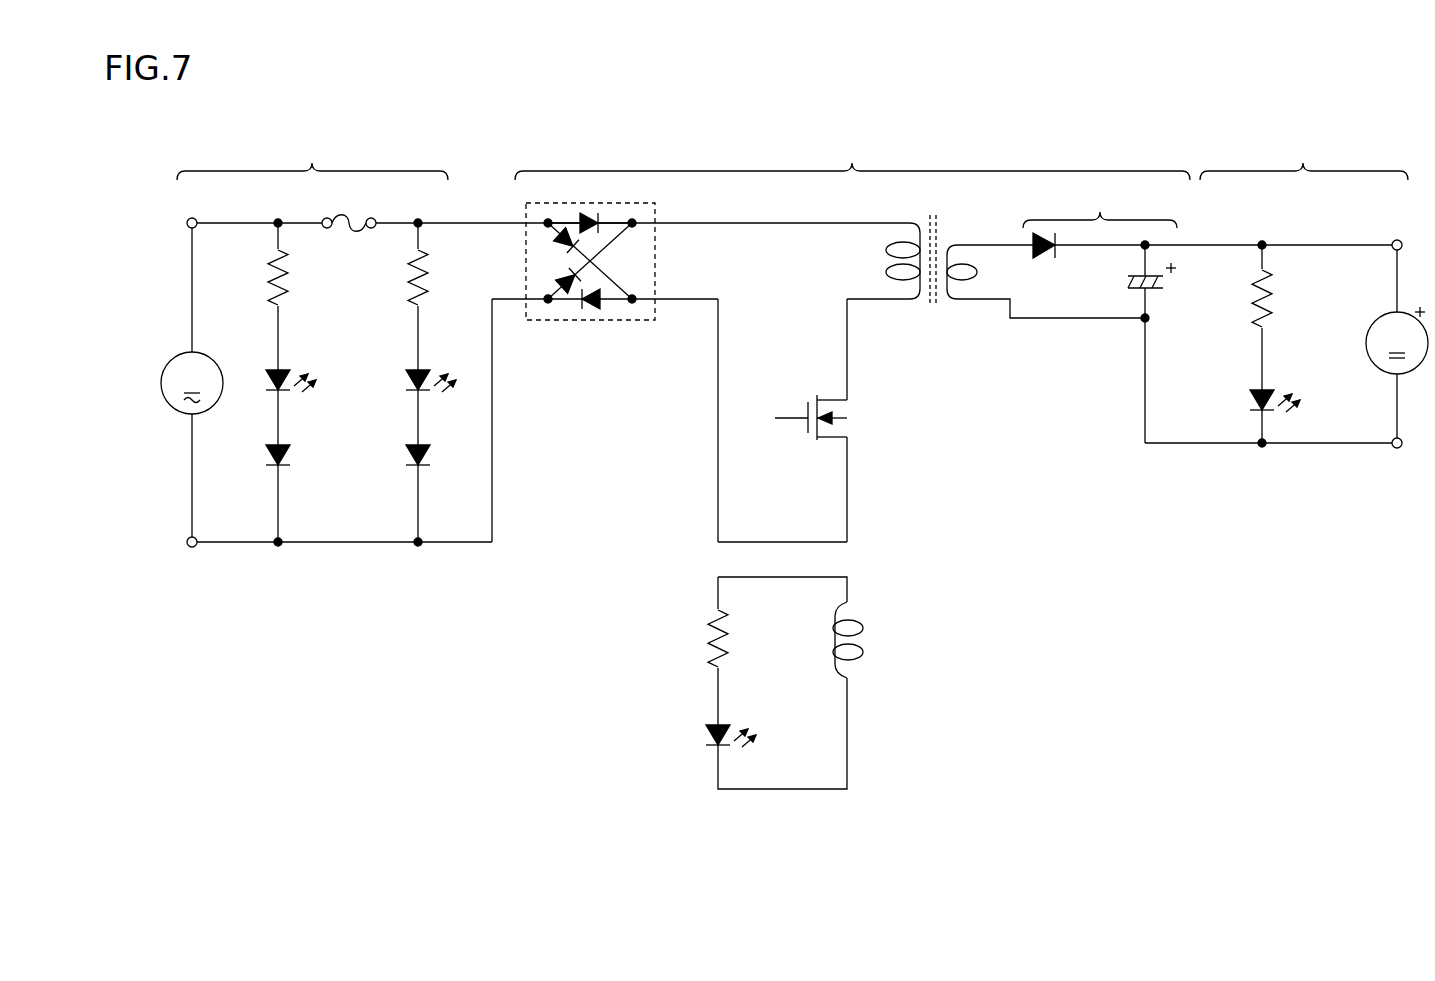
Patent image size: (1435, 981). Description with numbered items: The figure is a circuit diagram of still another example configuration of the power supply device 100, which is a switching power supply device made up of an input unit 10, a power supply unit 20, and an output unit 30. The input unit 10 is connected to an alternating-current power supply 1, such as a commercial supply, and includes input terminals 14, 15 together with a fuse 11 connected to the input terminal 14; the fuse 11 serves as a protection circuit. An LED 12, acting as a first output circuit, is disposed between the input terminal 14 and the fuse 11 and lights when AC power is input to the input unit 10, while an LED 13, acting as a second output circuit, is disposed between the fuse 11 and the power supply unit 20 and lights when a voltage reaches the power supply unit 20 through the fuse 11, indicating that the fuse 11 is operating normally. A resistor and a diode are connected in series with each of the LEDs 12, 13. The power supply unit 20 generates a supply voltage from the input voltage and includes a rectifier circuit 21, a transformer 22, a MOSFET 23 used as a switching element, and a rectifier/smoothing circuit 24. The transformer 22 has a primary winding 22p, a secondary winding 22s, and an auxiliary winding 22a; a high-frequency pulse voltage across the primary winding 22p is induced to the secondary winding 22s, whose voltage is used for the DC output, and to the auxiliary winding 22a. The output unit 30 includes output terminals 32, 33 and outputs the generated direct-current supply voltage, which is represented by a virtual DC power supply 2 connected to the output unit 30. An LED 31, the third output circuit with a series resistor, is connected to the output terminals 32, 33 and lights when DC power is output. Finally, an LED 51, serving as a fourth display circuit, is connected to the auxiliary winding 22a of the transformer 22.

The power supply device 100 is at (1382, 117).
The input unit 10 is at (543, 340).
The alternating-current power supply 1 is at (172, 358).
The fuse 11 is at (352, 232).
The LED 12 is at (270, 370).
The LED 13 is at (410, 370).
The input terminal 14 is at (196, 218).
The input terminal 15 is at (196, 548).
The power supply unit 20 is at (841, 340).
The rectifier circuit 21 is at (618, 202).
The transformer 22 is at (952, 222).
The primary winding 22p is at (897, 303).
The secondary winding 22s is at (975, 303).
The auxiliary winding 22a is at (864, 628).
The MOSFET 23 is at (812, 396).
The rectifier/smoothing circuit 24 is at (1100, 316).
The output unit 30 is at (1276, 290).
The LED 31 is at (1256, 392).
The output terminal 32 is at (1394, 238).
The output terminal 33 is at (1394, 450).
The virtual DC power supply 2 is at (1378, 340).
The LED 51 is at (708, 726).